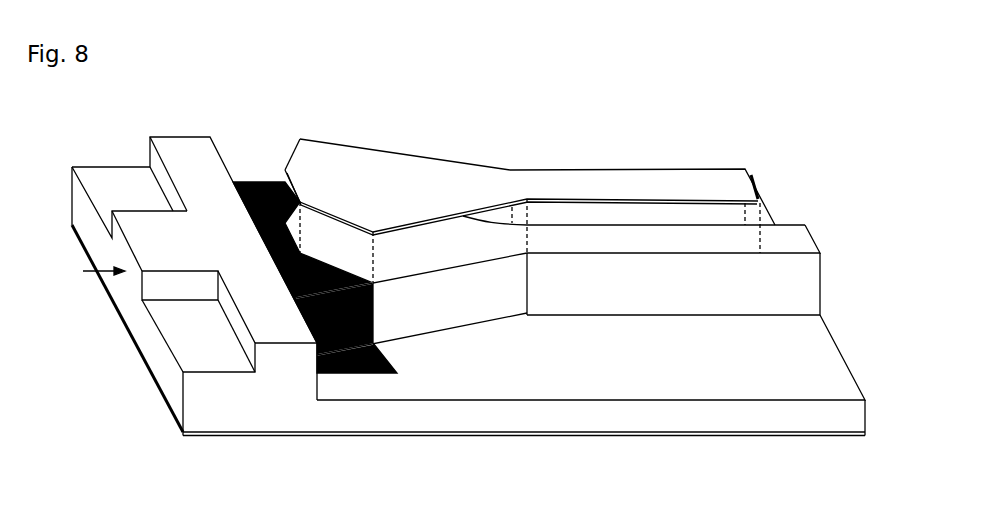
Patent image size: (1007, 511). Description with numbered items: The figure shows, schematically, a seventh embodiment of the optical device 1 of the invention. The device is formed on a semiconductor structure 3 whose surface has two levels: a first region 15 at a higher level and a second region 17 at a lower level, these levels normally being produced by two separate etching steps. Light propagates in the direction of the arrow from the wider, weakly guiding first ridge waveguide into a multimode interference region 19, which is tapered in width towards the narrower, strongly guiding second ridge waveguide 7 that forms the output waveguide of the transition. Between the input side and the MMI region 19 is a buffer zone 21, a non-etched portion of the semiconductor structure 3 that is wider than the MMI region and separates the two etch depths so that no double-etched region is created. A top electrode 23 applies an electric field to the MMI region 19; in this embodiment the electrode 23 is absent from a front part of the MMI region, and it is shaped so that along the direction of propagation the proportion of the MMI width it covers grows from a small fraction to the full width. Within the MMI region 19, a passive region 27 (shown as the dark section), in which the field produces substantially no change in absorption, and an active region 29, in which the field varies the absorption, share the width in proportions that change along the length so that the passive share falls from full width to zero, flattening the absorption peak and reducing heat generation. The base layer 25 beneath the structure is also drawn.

The optical device 1 is at (692, 150).
The semiconductor structure 3 is at (701, 284).
The second ridge waveguide 7 is at (733, 247).
The first region 15 is at (178, 342).
The second region 17 is at (628, 387).
The multimode interference (MMI) region 19 is at (448, 238).
The buffer zone 21 is at (277, 328).
The top electrode 23 is at (358, 167).
The base layer 25 is at (330, 437).
The passive region 27 is at (262, 185).
The active region 29 is at (428, 298).